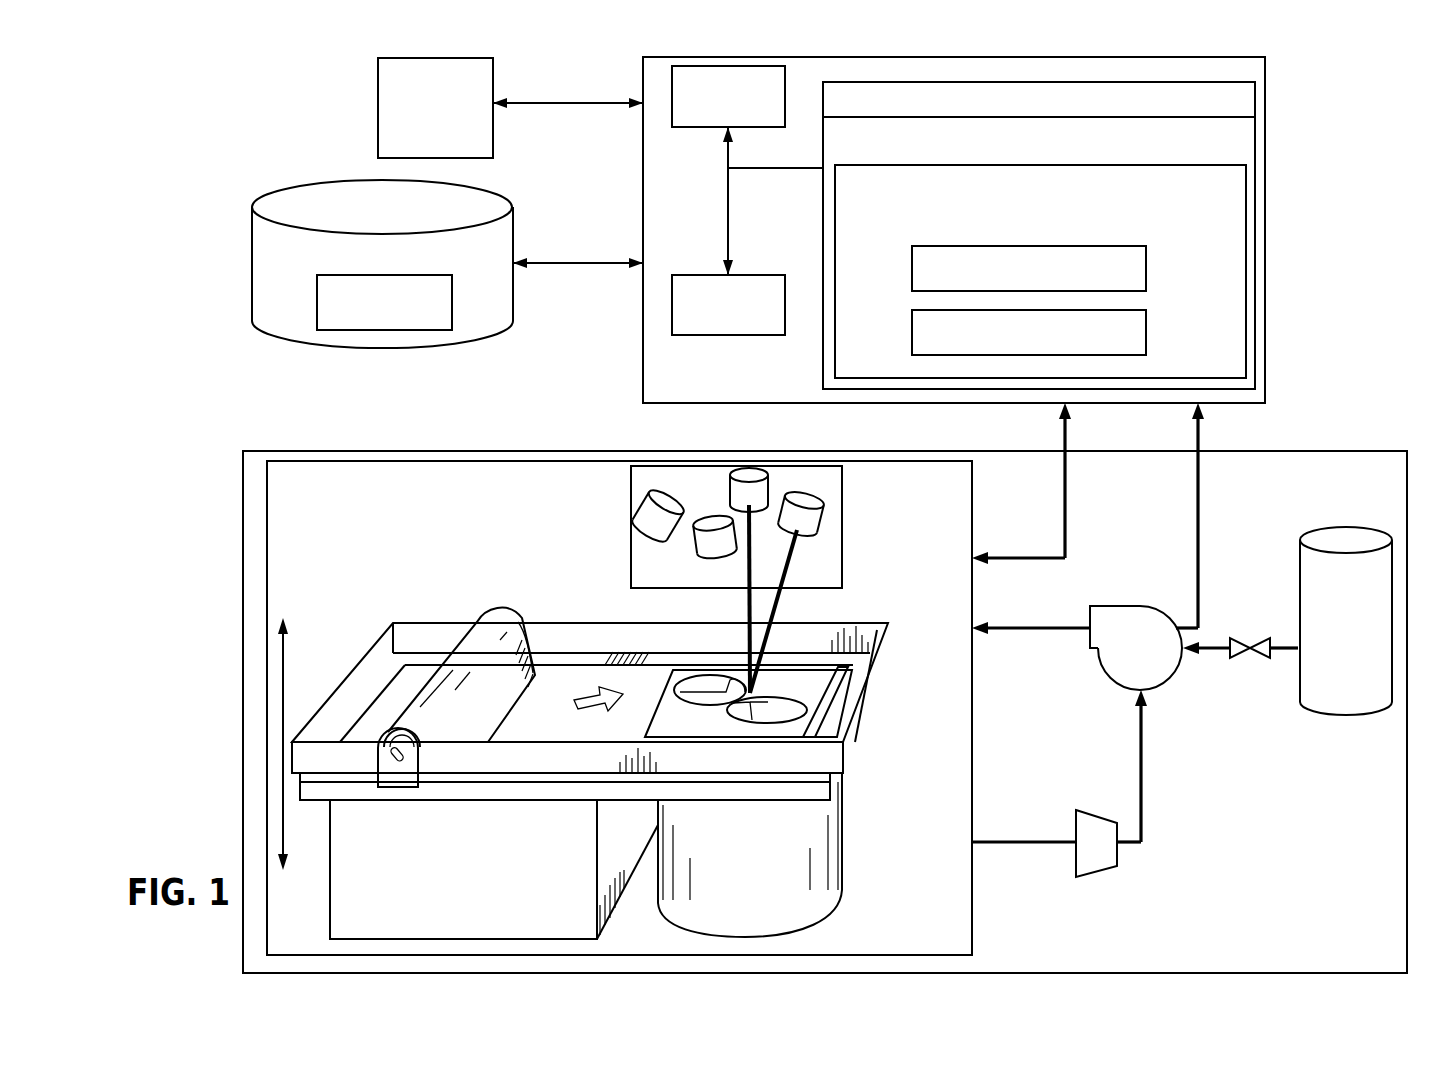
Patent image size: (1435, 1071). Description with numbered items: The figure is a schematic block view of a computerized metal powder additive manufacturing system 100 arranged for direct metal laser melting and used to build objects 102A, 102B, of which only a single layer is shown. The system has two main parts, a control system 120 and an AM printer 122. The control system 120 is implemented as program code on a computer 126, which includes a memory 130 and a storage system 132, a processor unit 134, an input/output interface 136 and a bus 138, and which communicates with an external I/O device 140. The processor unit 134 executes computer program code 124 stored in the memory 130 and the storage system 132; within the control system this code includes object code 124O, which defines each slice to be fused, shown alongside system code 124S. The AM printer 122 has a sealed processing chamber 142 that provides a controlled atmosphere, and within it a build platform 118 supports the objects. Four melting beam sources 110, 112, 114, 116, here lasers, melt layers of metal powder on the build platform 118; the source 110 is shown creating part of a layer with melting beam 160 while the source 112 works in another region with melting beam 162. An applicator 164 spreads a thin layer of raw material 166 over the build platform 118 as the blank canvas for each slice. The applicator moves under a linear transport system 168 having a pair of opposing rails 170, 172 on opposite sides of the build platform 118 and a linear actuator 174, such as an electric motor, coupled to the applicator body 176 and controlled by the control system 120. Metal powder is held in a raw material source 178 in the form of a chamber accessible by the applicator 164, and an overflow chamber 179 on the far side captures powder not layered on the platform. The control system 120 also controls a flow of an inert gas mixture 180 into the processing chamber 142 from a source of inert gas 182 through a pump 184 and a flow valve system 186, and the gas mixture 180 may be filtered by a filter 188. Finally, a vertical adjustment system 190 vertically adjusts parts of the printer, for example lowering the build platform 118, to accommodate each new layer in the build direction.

The additive manufacturing system 100 is at (290, 92).
The object 102A is at (700, 685).
The object 102B is at (788, 713).
The melting beam source 110 is at (815, 515).
The melting beam source 112 is at (742, 488).
The melting beam source 114 is at (705, 542).
The melting beam source 116 is at (660, 523).
The build platform 118 is at (812, 729).
The control system 120 is at (1061, 155).
The AM printer 122 is at (229, 514).
The computer program code 124 is at (960, 211).
The system code 124S is at (1135, 285).
The object code 124O is at (1133, 347).
The computer 126 is at (1226, 65).
The memory 130 is at (999, 115).
The storage system 132 is at (497, 264).
The processor unit 134 is at (773, 115).
The input/output interface 136 is at (773, 322).
The bus 138 is at (812, 168).
The external I/O device 140 is at (455, 150).
The processing chamber 142 is at (267, 600).
The melting beam 160 is at (785, 577).
The melting beam 162 is at (753, 637).
The applicator 164 is at (492, 636).
The layer of raw material 166 is at (638, 690).
The linear transport system 168 is at (360, 753).
The rail 170 is at (328, 757).
The rail 172 is at (433, 633).
The linear actuator 174 is at (403, 760).
The body 176 is at (467, 717).
The raw material source 178 is at (485, 877).
The overflow chamber 179 is at (847, 740).
The inert gas mixture 180 is at (1018, 629).
The source of inert gas 182 is at (1367, 666).
The pump 184 is at (1158, 656).
The flow valve system 186 is at (1258, 640).
The filter 188 is at (1093, 850).
The vertical adjustment system 190 is at (281, 657).